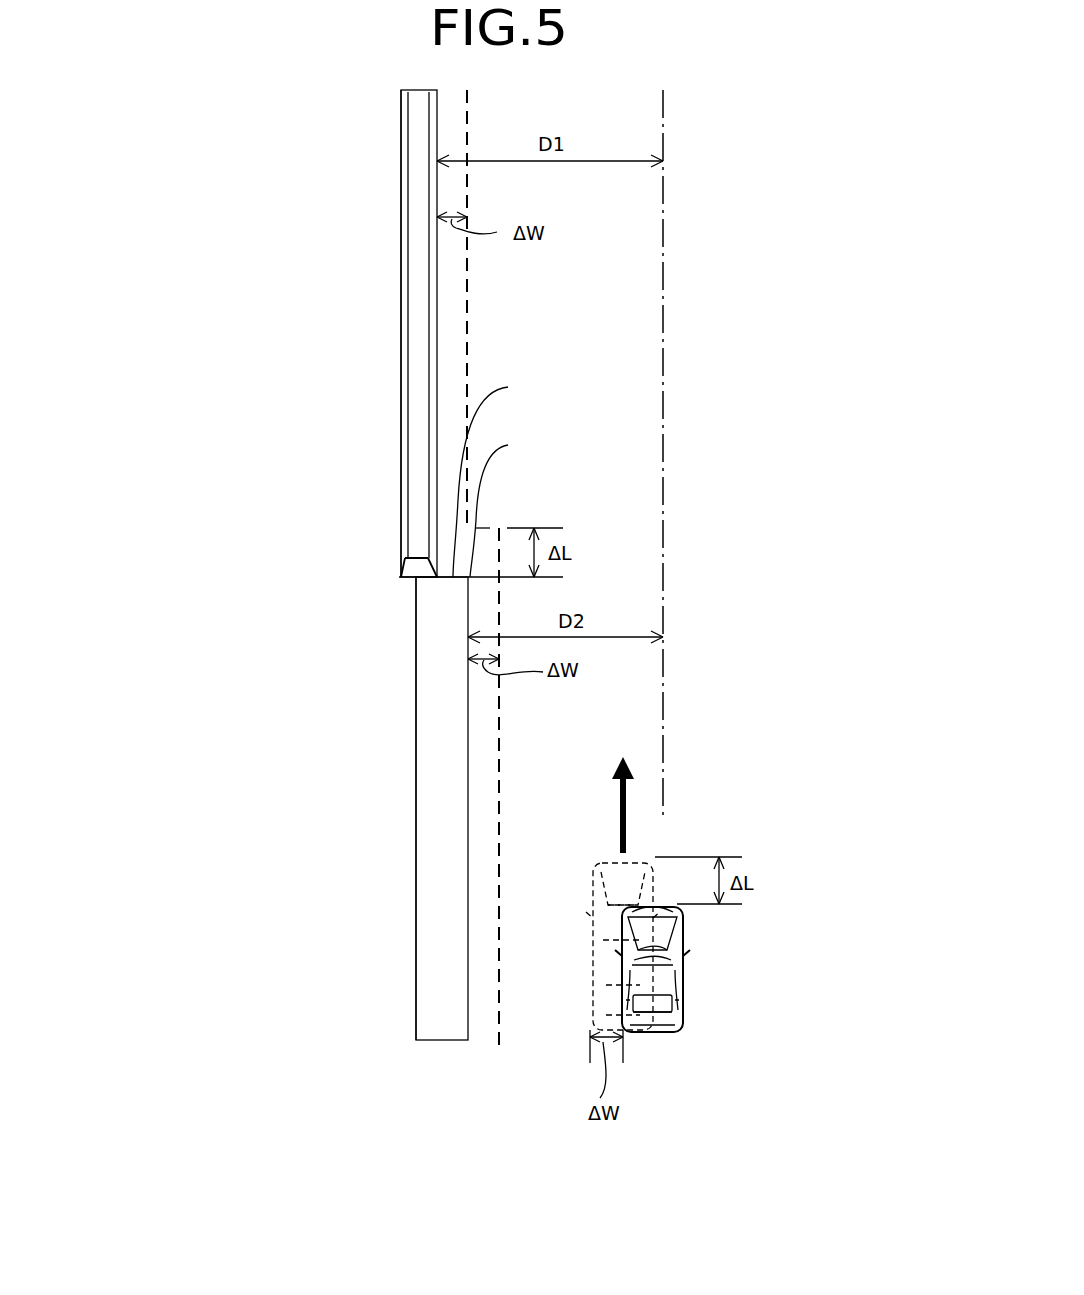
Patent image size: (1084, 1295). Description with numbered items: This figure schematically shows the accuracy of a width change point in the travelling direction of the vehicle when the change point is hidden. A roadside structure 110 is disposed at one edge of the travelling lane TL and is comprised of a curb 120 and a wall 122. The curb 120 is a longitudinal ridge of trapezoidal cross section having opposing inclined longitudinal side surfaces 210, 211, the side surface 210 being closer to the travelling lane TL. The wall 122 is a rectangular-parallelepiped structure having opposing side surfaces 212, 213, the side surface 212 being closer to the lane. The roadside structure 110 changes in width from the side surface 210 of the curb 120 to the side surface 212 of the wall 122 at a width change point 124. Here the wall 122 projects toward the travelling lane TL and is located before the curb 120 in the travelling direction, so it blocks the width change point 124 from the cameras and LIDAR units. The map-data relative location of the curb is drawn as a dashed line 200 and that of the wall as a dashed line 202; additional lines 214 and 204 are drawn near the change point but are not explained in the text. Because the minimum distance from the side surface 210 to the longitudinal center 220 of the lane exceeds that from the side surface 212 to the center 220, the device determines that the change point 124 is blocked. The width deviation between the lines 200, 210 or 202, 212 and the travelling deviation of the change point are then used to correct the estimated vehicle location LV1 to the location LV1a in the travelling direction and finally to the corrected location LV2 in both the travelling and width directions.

The roadside structure 110 is at (683, 970).
The curb 120 is at (426, 333).
The wall 122 is at (446, 707).
The width change point 124 is at (443, 577).
The relative location of the curb 200 is at (467, 350).
The relative location of the wall 202 is at (499, 712).
The end of lane marking 204 is at (487, 528).
The longitudinal side surface of the curb 210 is at (437, 285).
The longitudinal side surface of the curb 211 is at (401, 215).
The side surface of the wall 212 is at (468, 815).
The side surface of the wall 213 is at (370, 690).
The transition edge 214 is at (506, 475).
The longitudinal center of the travelling lane 220 is at (663, 275).
The estimated location of the vehicle LV1 is at (585, 955).
The corrected location of the vehicle in the travelling direction LV1a is at (592, 1040).
The corrected location of the vehicle LV2 is at (501, 638).
The travelling lane TL is at (708, 1133).